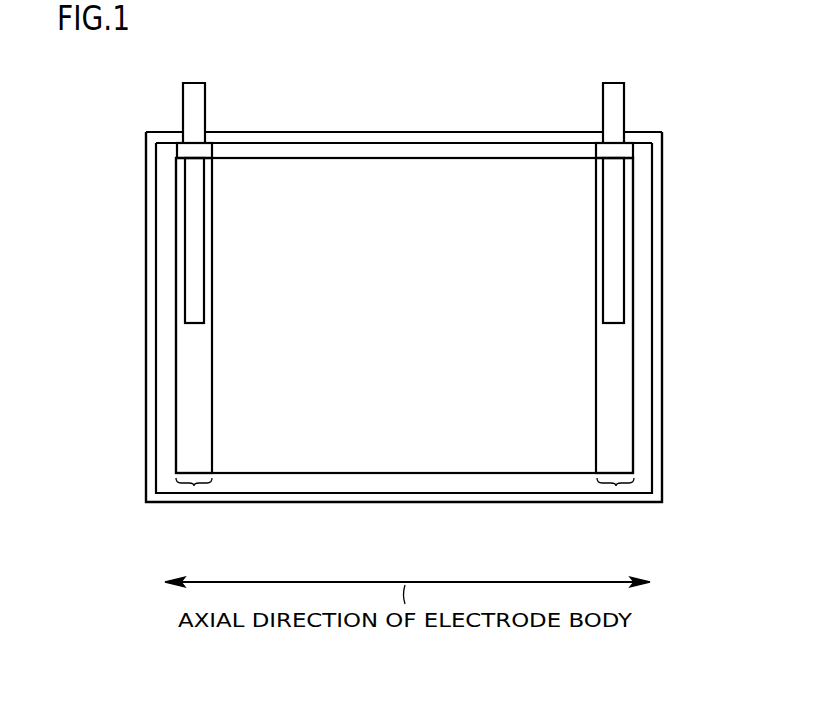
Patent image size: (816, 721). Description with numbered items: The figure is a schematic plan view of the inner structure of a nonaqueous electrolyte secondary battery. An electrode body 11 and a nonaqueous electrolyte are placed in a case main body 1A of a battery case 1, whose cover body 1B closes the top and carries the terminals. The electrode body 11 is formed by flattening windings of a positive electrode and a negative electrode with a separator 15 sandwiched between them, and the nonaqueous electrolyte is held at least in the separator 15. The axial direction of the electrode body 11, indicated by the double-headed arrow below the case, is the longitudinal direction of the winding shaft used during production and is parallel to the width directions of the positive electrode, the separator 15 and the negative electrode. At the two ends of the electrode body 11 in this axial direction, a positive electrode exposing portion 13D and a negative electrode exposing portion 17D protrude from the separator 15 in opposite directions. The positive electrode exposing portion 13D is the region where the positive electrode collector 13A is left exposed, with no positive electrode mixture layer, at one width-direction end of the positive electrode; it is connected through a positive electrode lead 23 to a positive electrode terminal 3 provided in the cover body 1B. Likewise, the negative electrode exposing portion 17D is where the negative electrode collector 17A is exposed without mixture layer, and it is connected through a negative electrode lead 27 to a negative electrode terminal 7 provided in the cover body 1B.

The battery case 1 is at (446, 312).
The case main body 1A is at (716, 123).
The cover body 1B is at (655, 136).
The positive electrode terminal 3 is at (614, 97).
The negative electrode terminal 7 is at (194, 97).
The electrode body 11 is at (370, 473).
The positive electrode collector 13A is at (618, 385).
The positive electrode exposing portion 13D is at (616, 487).
The separator 15 is at (510, 453).
The negative electrode collector 17A is at (190, 388).
The negative electrode exposing portion 17D is at (194, 487).
The positive electrode lead 23 is at (616, 273).
The negative electrode lead 27 is at (193, 275).